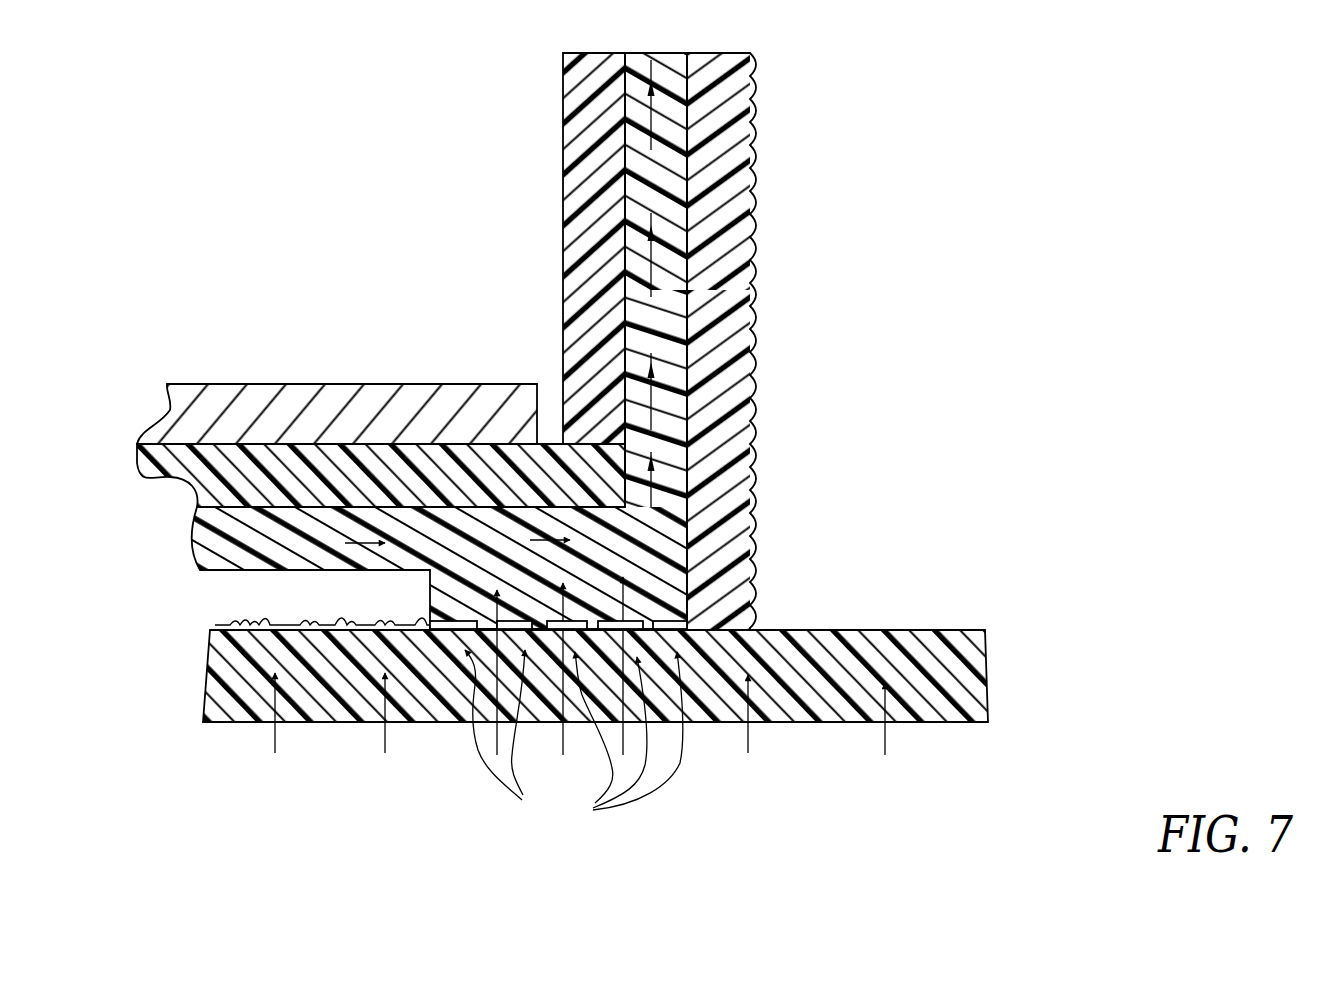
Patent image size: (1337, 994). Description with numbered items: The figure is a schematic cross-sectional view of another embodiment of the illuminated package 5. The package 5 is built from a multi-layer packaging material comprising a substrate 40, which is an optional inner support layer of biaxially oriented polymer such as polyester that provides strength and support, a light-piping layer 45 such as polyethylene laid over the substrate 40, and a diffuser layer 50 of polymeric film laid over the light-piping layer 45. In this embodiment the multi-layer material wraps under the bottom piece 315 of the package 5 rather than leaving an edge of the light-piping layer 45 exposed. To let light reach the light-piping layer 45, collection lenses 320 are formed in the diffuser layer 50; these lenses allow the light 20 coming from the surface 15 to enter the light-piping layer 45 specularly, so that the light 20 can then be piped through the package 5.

The package 5 is at (905, 185).
The surface 15 is at (338, 693).
The light 20 is at (620, 537).
The substrate 40 is at (592, 282).
The light-piping layer 45 is at (620, 535).
The diffuser layer 50 is at (750, 307).
The bottom piece 315 is at (410, 403).
The collection lens 320 is at (558, 721).